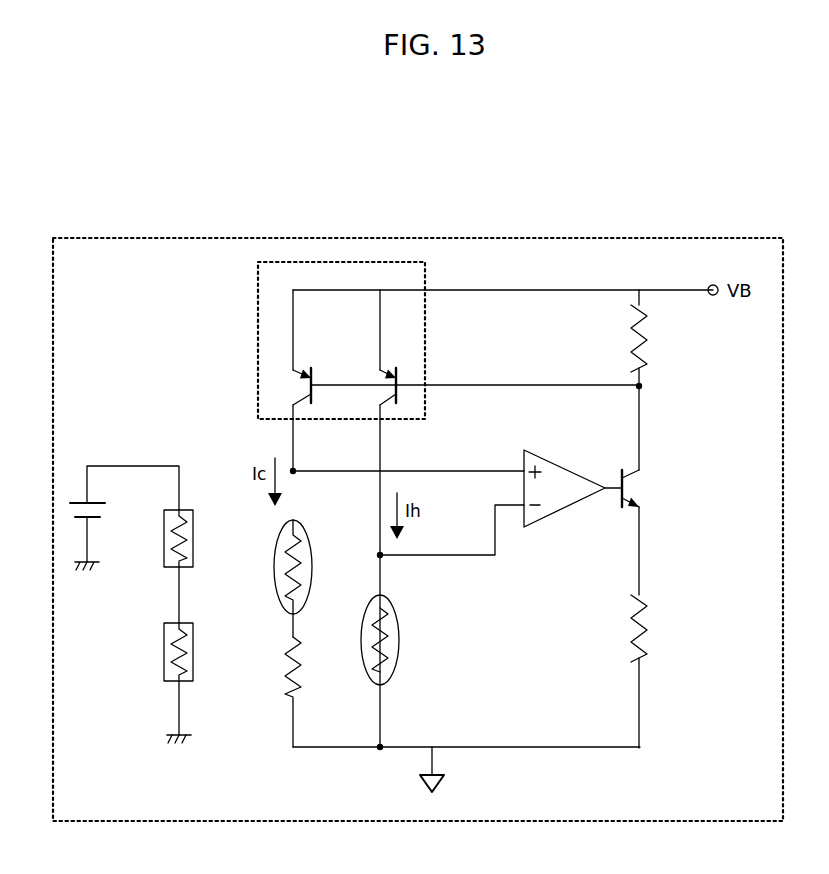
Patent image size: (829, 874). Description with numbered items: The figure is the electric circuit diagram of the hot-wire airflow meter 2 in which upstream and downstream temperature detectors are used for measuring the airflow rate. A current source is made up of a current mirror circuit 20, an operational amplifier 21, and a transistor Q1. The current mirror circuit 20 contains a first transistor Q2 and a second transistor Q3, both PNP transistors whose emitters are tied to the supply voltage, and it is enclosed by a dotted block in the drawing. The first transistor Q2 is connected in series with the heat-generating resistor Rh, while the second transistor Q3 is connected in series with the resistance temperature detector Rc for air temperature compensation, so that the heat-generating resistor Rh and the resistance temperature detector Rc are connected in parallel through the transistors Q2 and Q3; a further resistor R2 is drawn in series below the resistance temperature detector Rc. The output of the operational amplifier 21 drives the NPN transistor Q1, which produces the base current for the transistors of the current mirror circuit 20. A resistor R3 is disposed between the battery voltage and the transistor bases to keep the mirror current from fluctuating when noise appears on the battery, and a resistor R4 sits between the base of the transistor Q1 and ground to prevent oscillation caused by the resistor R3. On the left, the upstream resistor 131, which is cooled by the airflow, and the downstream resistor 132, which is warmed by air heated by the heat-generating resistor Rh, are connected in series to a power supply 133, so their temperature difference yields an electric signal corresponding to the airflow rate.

The airflow meter 2 is at (786, 338).
The current mirror circuit 20 is at (362, 262).
The operational amplifier 21 is at (560, 510).
The upstream resistor 131 is at (196, 560).
The downstream resistor 132 is at (196, 673).
The power supply 133 is at (107, 512).
The transistor Q1 is at (645, 492).
The first transistor Q2 is at (399, 370).
The second transistor Q3 is at (316, 370).
The resistor R2 is at (303, 695).
The resistor R3 is at (650, 352).
The resistor R4 is at (652, 642).
The resistance temperature detector Rc is at (313, 561).
The heat-generating resistor Rh is at (400, 640).